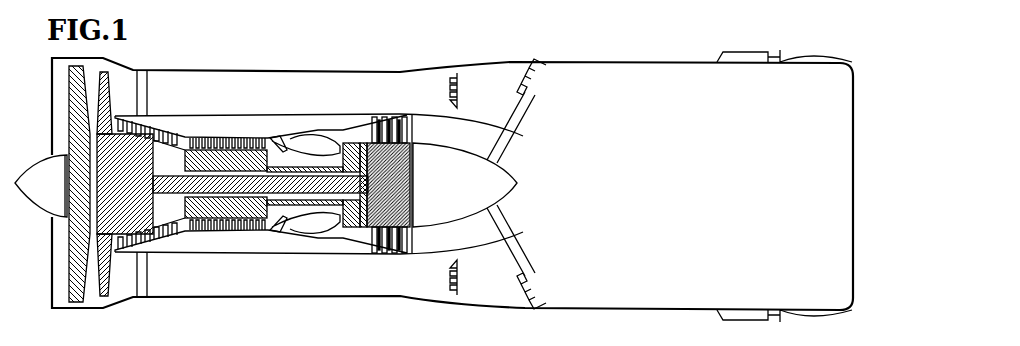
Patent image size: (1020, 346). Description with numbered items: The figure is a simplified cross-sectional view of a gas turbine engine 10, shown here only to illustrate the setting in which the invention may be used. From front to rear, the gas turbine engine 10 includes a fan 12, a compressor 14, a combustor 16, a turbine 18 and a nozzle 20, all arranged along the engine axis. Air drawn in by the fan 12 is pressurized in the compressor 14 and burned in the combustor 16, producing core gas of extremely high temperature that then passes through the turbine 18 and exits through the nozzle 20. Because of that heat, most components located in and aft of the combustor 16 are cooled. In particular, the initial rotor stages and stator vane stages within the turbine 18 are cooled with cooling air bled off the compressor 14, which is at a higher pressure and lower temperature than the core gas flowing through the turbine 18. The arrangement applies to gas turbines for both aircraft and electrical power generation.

The gas turbine engine 10 is at (506, 55).
The fan 12 is at (90, 288).
The compressor 14 is at (183, 231).
The combustor 16 is at (301, 240).
The turbine 18 is at (371, 242).
The nozzle 20 is at (716, 193).